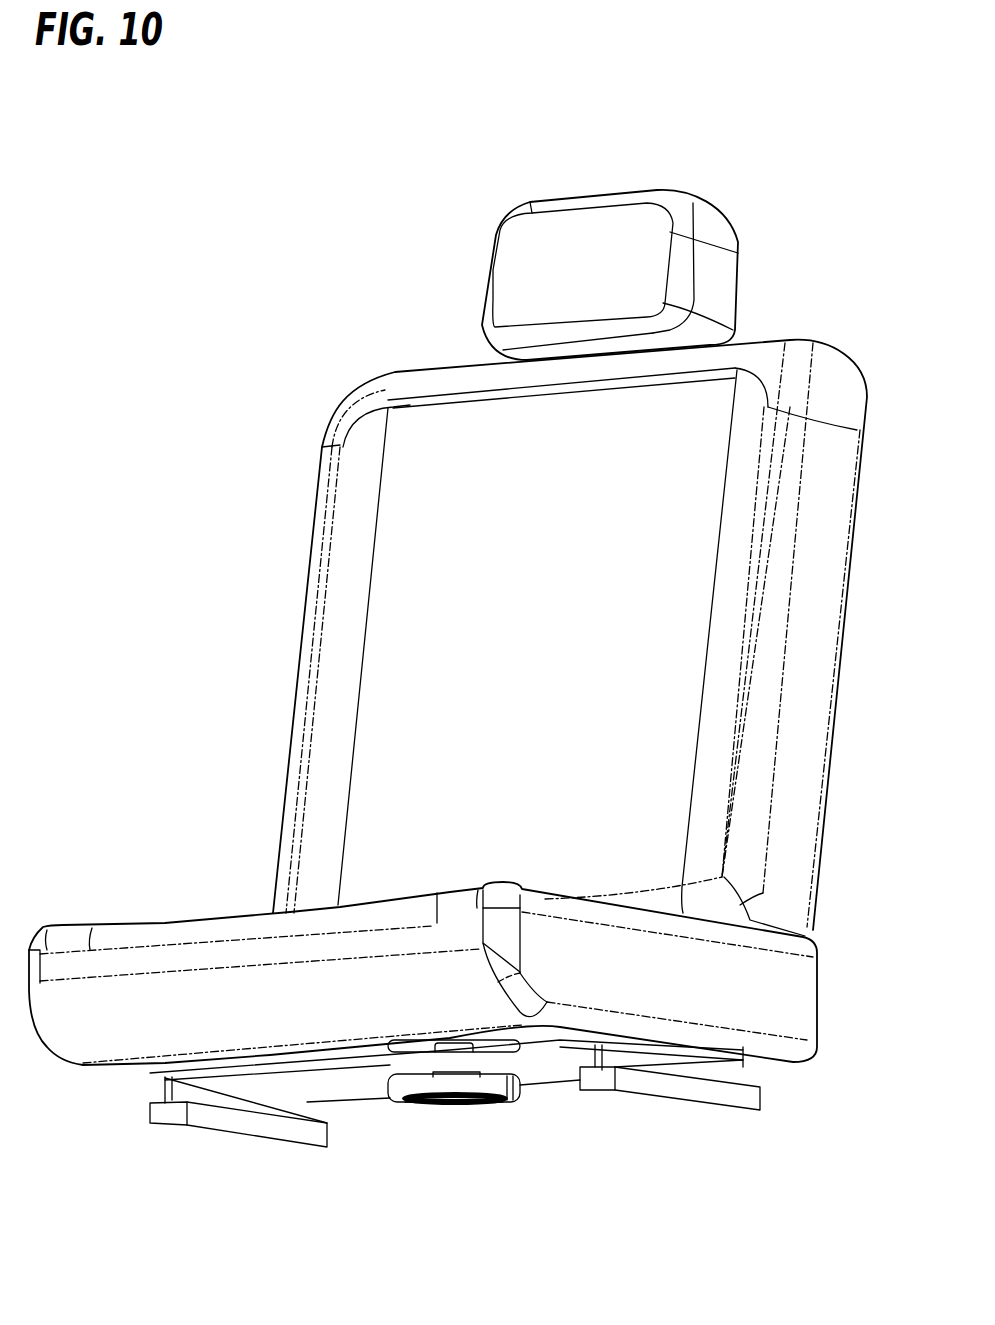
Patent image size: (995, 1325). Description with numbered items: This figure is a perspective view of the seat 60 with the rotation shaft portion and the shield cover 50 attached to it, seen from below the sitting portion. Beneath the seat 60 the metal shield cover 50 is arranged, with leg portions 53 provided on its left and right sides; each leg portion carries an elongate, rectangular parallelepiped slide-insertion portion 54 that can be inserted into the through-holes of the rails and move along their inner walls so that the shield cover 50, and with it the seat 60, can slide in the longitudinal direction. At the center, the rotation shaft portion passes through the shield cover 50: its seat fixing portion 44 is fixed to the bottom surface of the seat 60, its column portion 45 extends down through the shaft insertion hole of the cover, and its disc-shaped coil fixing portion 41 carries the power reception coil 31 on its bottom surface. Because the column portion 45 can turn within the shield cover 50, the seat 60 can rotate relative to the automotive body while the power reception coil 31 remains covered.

The seat 60 is at (283, 485).
The shield cover 50 is at (348, 1082).
The leg portions 53 is at (163, 1110).
The slide-insertion portions 54 is at (237, 1125).
The seat fixing portion 44 is at (488, 1043).
The coil fixing portion 41 is at (462, 1084).
The column portion 45 is at (440, 1075).
The power reception coil 31 is at (490, 1103).